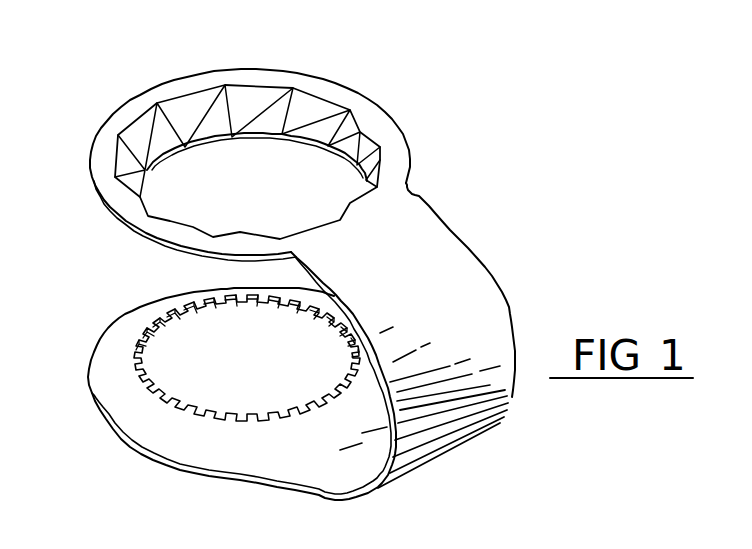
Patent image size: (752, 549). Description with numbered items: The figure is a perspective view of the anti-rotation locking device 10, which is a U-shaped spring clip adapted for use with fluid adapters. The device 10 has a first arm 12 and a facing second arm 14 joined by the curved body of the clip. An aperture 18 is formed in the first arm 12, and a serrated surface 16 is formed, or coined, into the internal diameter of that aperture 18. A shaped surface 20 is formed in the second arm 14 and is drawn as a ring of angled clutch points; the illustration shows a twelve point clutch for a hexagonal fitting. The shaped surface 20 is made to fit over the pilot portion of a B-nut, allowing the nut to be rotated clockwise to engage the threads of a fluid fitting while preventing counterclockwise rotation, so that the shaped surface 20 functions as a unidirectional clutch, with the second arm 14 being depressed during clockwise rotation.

The anti-rotation locking device 10 is at (483, 202).
The first arm 12 is at (143, 457).
The second arm 14 is at (400, 128).
The serrated surface 16 is at (147, 333).
The aperture 18 is at (172, 362).
The shaped surface 20 is at (296, 102).